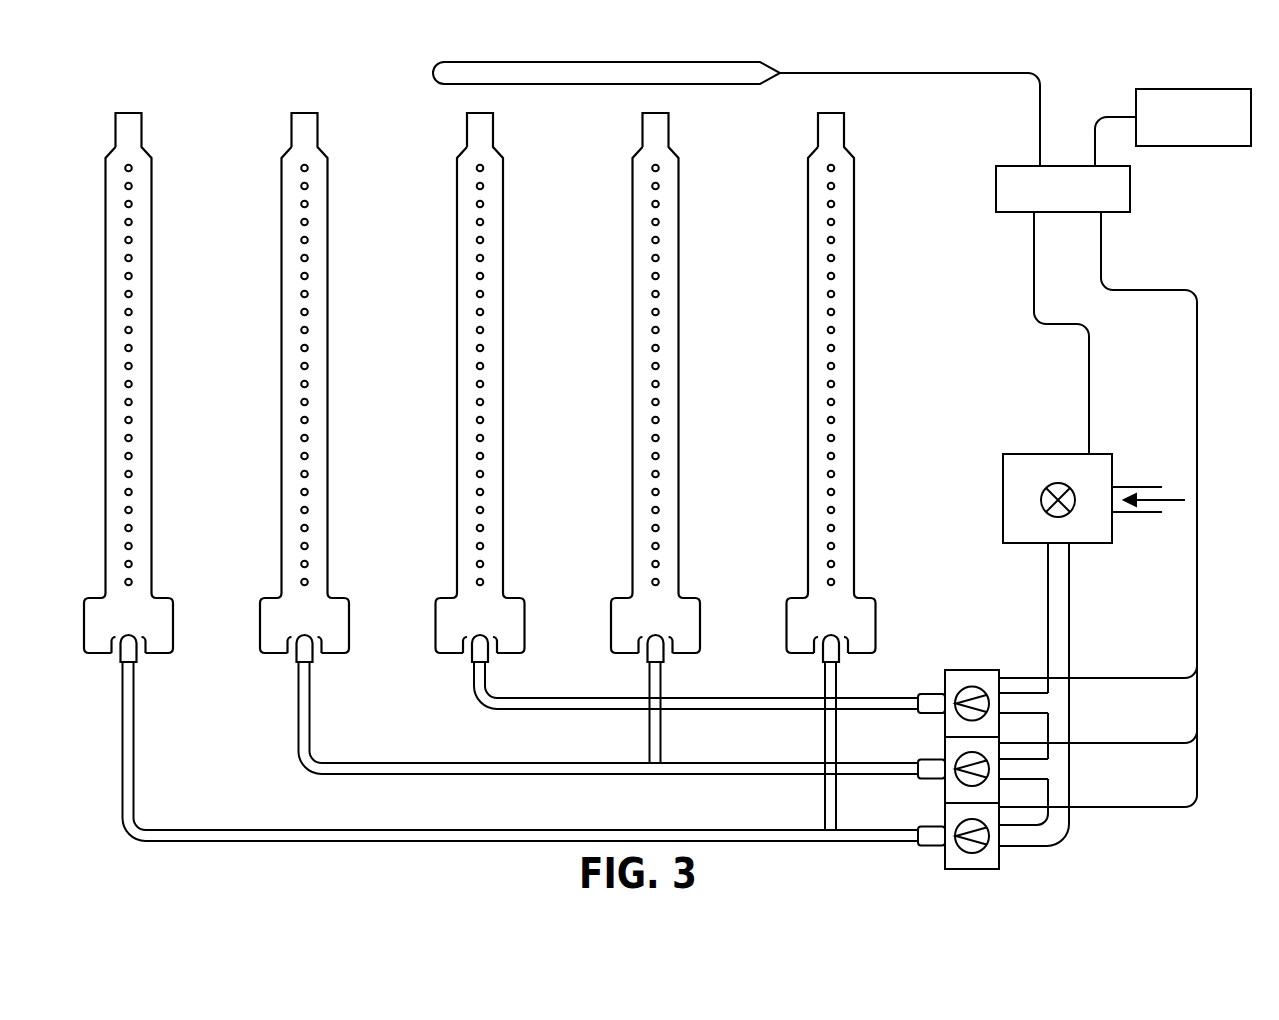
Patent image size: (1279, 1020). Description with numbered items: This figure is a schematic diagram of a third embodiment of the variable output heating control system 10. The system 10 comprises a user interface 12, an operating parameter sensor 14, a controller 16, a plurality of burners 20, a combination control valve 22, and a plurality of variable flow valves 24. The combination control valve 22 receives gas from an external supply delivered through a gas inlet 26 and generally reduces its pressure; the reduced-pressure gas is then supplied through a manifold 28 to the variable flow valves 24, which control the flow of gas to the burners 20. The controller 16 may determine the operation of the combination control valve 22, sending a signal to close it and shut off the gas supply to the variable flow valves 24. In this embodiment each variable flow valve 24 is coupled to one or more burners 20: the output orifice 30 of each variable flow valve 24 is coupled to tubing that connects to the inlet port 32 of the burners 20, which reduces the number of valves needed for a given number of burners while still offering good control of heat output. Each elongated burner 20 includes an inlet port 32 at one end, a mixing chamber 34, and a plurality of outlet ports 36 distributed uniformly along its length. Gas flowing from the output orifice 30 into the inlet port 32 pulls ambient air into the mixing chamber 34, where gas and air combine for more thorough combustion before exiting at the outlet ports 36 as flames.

The variable output heating control system 10 is at (1050, 56).
The user interface 12 is at (1227, 148).
The operating parameter sensor 14 is at (438, 73).
The controller 16 is at (1130, 192).
The burner 20 is at (124, 128).
The combination control valve 22 is at (1030, 453).
The variable flow valve 24 is at (944, 671).
The gas inlet 26 is at (1145, 514).
The manifold 28 is at (1070, 596).
The output orifice 30 is at (122, 655).
The inlet port 32 is at (144, 630).
The mixing chamber 34 is at (158, 606).
The outlet ports 36 is at (132, 330).